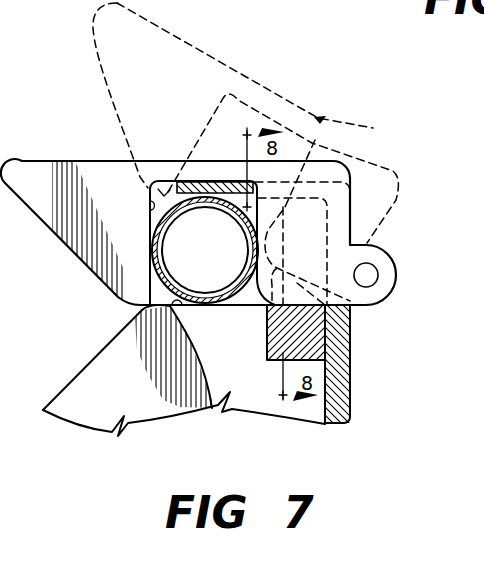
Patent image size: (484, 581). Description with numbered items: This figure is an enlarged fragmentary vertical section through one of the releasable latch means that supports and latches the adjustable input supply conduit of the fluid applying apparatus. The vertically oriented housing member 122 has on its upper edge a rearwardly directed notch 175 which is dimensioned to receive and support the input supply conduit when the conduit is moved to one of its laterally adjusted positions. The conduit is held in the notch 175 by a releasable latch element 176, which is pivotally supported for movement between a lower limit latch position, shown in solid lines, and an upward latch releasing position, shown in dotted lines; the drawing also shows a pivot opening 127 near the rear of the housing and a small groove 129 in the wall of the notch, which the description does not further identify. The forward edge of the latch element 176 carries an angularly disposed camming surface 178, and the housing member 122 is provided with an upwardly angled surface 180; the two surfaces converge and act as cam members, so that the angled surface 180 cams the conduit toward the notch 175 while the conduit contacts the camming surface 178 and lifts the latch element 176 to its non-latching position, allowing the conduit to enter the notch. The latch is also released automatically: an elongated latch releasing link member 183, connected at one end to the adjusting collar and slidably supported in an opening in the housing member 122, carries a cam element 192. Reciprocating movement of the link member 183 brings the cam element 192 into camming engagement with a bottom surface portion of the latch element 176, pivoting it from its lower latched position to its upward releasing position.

The housing member 122 is at (131, 409).
The pivot pin hole 127 is at (366, 276).
The groove 129 is at (150, 208).
The rearwardly directed notch 175 is at (178, 305).
The releasable latch element 176 is at (340, 157).
The camming surface 178 is at (74, 252).
The upwardly angled surface 180 is at (93, 361).
The elongated latch releasing link member 183 is at (310, 340).
The cam element 192 is at (347, 309).